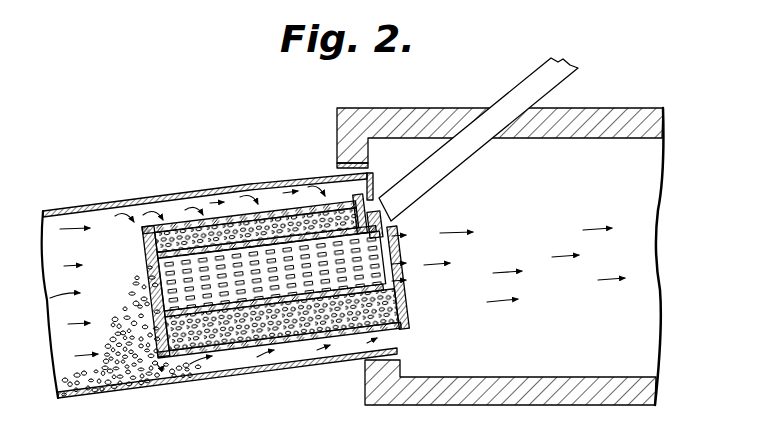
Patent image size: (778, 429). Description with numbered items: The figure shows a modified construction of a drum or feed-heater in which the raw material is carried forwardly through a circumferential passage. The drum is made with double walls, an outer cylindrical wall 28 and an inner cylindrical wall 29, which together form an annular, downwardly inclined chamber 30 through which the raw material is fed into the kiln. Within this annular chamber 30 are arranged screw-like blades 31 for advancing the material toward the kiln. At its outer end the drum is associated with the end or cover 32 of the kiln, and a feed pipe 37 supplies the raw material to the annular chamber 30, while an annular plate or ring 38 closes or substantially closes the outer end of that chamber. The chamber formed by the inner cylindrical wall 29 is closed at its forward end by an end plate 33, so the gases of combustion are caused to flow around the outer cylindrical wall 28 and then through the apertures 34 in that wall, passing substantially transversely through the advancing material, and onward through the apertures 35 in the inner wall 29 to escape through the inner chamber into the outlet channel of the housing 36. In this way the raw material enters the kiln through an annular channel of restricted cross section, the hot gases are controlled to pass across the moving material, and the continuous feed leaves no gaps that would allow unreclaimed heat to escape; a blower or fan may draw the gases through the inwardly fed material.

The outer cylindrical wall 28 is at (222, 218).
The inner cylindrical wall 29 is at (187, 222).
The annular chamber 30 is at (292, 183).
The screw-like blades 31 is at (141, 242).
The end or cover of the kiln 32 is at (397, 343).
The end plate 33 is at (178, 288).
The apertures in outer wall 34 is at (318, 196).
The apertures in inner wall 35 is at (270, 216).
The housing 36 is at (620, 118).
The feed pipe 37 is at (509, 101).
The annular plate or ring 38 is at (400, 303).